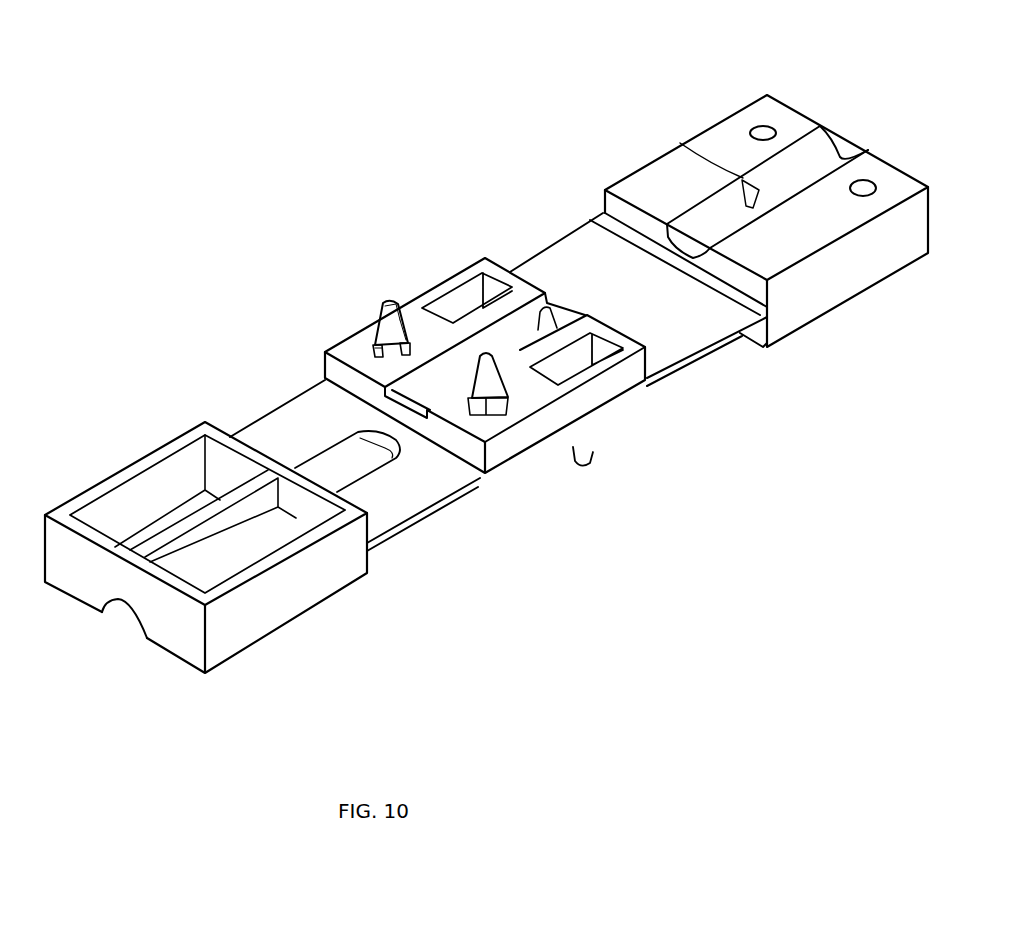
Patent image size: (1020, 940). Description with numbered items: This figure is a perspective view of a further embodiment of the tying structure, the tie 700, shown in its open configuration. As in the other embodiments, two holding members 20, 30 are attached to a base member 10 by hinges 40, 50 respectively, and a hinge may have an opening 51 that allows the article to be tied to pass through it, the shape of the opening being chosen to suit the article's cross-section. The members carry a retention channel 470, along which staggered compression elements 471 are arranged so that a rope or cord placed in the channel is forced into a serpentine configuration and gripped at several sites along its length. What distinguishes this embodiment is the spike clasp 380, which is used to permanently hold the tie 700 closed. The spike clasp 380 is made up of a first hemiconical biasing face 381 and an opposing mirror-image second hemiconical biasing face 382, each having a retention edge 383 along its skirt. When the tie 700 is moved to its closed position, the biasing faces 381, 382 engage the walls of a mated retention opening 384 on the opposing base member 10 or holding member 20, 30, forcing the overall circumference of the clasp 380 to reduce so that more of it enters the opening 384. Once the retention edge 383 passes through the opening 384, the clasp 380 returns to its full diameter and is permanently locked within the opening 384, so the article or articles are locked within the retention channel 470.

The base member 10 is at (562, 458).
The holding member 20 is at (840, 292).
The holding member 30 is at (272, 614).
The hinge 40 is at (677, 332).
The hinge 50 is at (405, 512).
The opening 51 is at (338, 468).
The spike clasp 380 is at (360, 330).
The first hemiconical biasing face 381 is at (376, 327).
The second hemiconical biasing face 382 is at (398, 327).
The retention edge 383 is at (373, 342).
The retention opening 384 is at (760, 128).
The retention channel 470 is at (130, 633).
The compression element 471 is at (680, 143).
The tie 700 is at (529, 514).